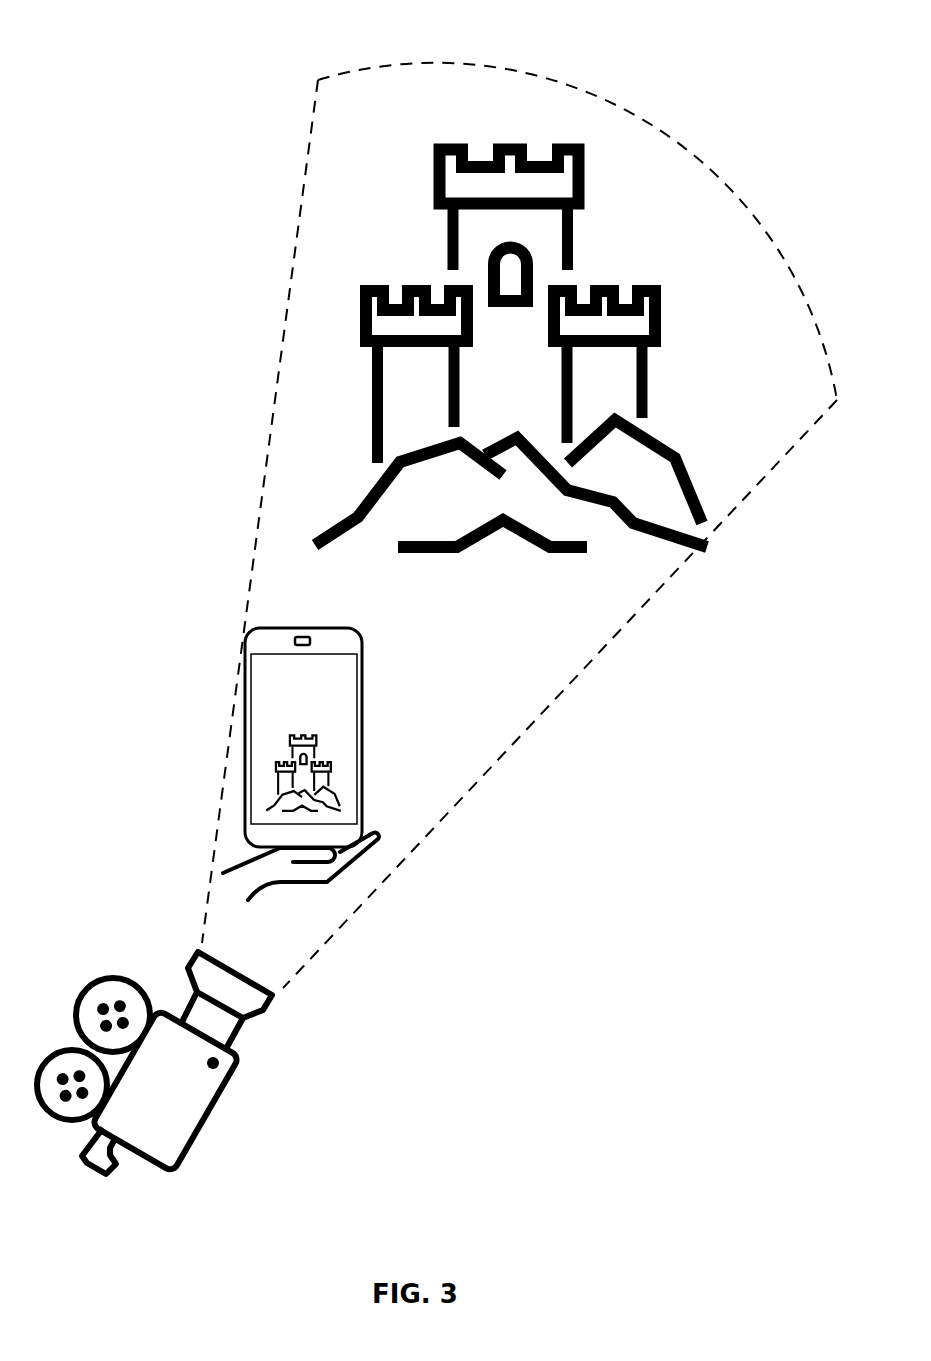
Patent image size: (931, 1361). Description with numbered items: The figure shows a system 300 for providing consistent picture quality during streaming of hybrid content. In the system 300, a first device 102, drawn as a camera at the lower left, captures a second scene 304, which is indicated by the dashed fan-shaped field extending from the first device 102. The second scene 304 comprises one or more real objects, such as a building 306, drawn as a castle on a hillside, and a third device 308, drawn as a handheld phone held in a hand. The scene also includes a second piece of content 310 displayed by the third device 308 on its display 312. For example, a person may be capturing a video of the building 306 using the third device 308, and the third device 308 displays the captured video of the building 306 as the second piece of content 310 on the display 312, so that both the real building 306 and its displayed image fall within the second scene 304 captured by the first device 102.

The system 300 is at (419, 33).
The second scene 304 is at (698, 158).
The building 306 is at (661, 295).
The third device 308 is at (319, 723).
The second piece of content 310 is at (318, 739).
The display 312 is at (256, 723).
The first device 102 is at (113, 975).